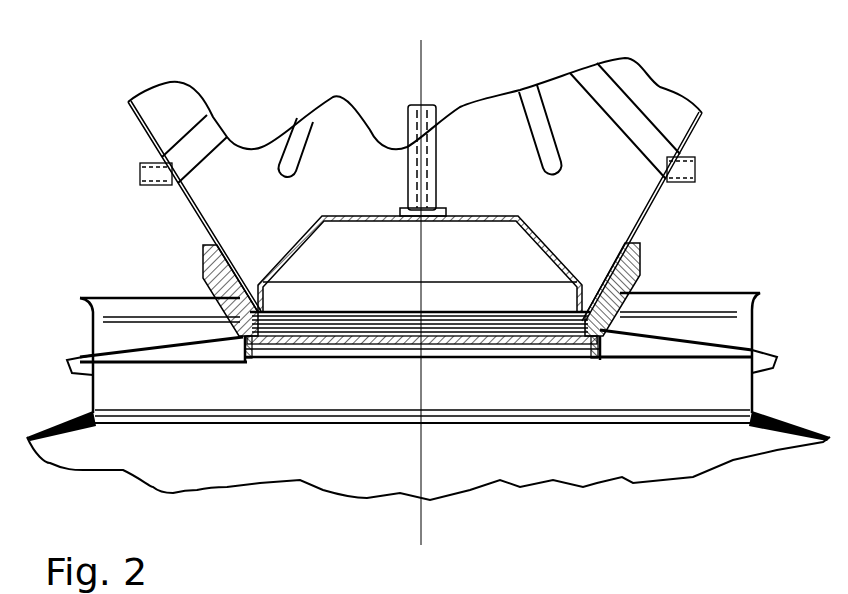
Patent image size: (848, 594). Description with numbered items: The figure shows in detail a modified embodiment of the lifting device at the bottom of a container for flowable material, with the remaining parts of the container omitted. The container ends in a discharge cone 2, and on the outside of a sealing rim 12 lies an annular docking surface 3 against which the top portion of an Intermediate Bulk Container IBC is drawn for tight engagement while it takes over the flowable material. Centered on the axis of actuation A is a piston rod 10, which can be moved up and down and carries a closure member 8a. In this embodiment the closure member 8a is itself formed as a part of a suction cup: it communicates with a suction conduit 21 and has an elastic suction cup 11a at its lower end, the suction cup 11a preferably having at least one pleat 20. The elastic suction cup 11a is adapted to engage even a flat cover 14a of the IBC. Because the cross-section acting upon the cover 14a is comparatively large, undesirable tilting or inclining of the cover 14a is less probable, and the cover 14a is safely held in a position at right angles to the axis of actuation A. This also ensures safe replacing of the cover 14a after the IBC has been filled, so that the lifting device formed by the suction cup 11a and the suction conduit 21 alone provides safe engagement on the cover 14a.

The axis of actuation A is at (424, 66).
The discharge cone 2 is at (190, 210).
The annular docking surface 3 is at (630, 284).
The closure member 8a is at (540, 236).
The piston rod 10 is at (437, 173).
The elastic suction cup 11a is at (283, 349).
The sealing rim 12 is at (206, 266).
The flat cover 14a is at (372, 345).
The pleat 20 is at (570, 330).
The suction conduit 21 is at (420, 182).
The Intermediate Bulk Container IBC is at (485, 467).